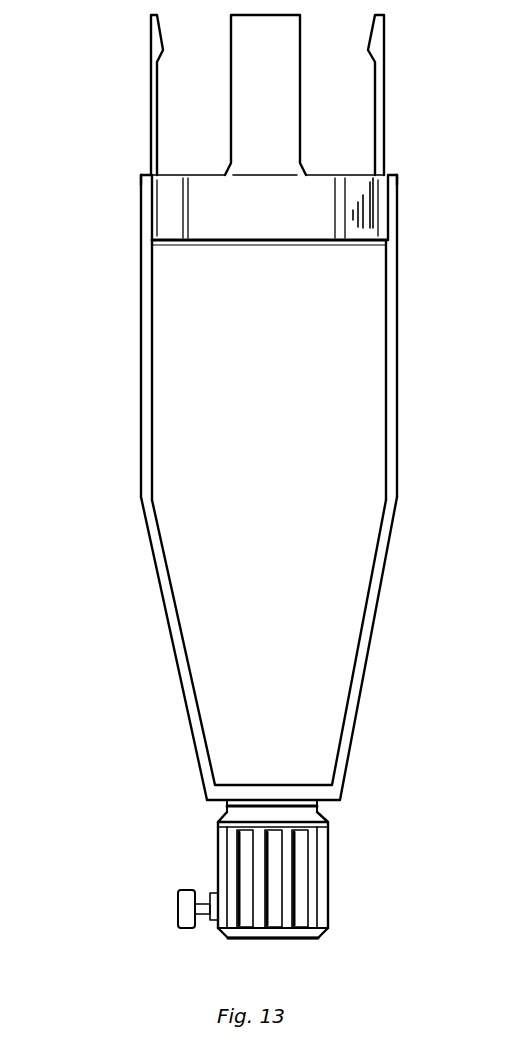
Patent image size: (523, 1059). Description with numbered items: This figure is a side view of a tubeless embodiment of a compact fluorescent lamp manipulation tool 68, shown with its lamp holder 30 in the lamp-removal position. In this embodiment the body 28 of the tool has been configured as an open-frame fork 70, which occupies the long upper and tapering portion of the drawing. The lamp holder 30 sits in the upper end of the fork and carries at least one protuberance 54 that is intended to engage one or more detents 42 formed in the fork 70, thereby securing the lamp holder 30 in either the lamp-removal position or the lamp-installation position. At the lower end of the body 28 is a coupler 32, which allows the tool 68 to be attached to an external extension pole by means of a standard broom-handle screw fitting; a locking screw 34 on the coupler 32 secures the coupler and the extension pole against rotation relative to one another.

The lamp holder 30 is at (395, 158).
The protuberance 54 is at (137, 200).
The detent 42 is at (135, 208).
The open-frame fork 70 is at (146, 368).
The compact fluorescent lamp manipulation tool 68 is at (456, 349).
The body 28 is at (166, 602).
The coupler 32 is at (330, 892).
The locking screw 34 is at (178, 900).